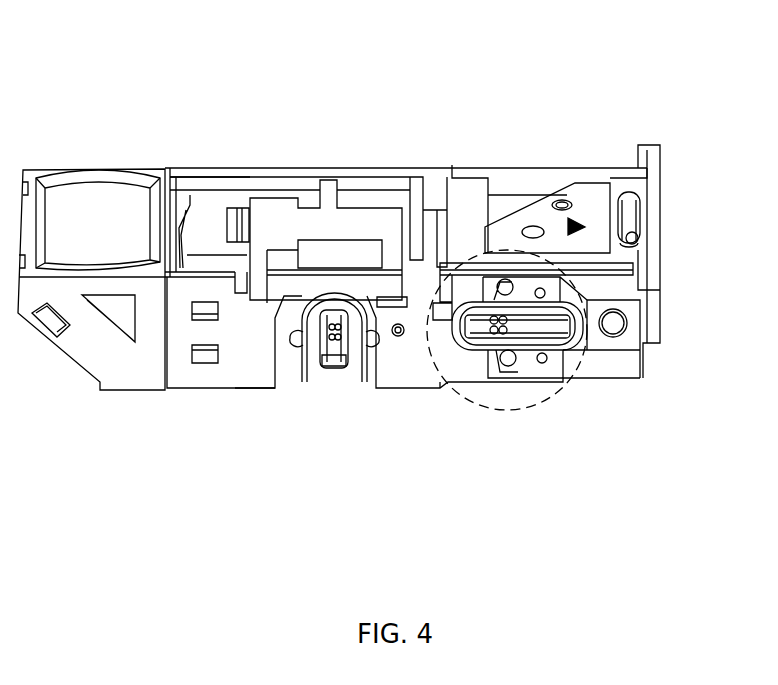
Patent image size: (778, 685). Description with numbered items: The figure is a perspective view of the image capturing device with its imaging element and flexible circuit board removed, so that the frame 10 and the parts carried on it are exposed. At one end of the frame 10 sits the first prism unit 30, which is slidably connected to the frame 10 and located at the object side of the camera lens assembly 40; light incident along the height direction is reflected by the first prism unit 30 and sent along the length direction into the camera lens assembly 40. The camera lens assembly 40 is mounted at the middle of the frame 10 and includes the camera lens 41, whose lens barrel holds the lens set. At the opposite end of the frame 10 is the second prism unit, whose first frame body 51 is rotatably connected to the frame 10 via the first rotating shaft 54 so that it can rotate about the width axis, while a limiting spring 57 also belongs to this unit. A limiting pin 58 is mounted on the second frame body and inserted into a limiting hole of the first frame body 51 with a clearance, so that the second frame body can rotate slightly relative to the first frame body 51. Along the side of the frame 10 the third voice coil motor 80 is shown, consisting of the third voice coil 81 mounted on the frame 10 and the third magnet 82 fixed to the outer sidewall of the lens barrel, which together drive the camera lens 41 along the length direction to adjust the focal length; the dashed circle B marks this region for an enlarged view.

The frame 10 is at (133, 373).
The first prism unit 30 is at (118, 208).
The camera lens assembly 40 is at (358, 195).
The camera lens 41 is at (265, 218).
The first frame body 51 is at (677, 143).
The first rotating shaft 54 is at (613, 323).
The limiting spring 57 is at (628, 212).
The limiting pin 58 is at (558, 198).
The third voice coil motor 80 is at (331, 423).
The third voice coil 81 is at (317, 372).
The third magnet 82 is at (342, 343).
The detail region B is at (510, 410).